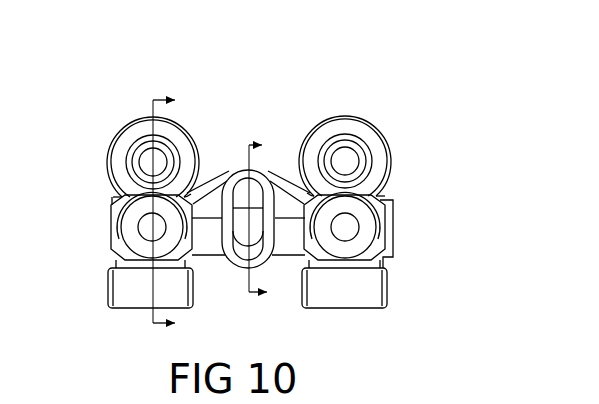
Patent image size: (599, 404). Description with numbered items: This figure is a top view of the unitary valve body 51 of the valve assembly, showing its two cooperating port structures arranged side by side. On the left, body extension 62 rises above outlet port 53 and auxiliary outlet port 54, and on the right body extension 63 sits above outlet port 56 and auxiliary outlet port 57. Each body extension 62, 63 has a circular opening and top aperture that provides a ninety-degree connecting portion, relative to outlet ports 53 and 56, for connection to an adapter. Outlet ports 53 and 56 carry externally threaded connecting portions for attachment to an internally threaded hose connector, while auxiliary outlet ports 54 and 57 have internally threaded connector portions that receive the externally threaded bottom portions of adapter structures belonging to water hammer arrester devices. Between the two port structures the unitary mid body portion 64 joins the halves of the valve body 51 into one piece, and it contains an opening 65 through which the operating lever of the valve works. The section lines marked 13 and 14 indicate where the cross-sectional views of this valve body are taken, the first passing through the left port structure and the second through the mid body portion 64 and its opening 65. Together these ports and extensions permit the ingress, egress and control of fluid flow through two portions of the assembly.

The valve body 51 is at (225, 133).
The section line 13- 13 is at (178, 212).
The section line 14- 14 is at (272, 219).
The outlet port 53 is at (126, 309).
The auxiliary outlet port 54 is at (134, 230).
The outlet port 56 is at (376, 309).
The auxiliary outlet port 57 is at (378, 218).
The body extension 62 is at (121, 131).
The body extension 63 is at (378, 133).
The unitary mid body portion 64 is at (248, 176).
The opening 65 is at (236, 263).